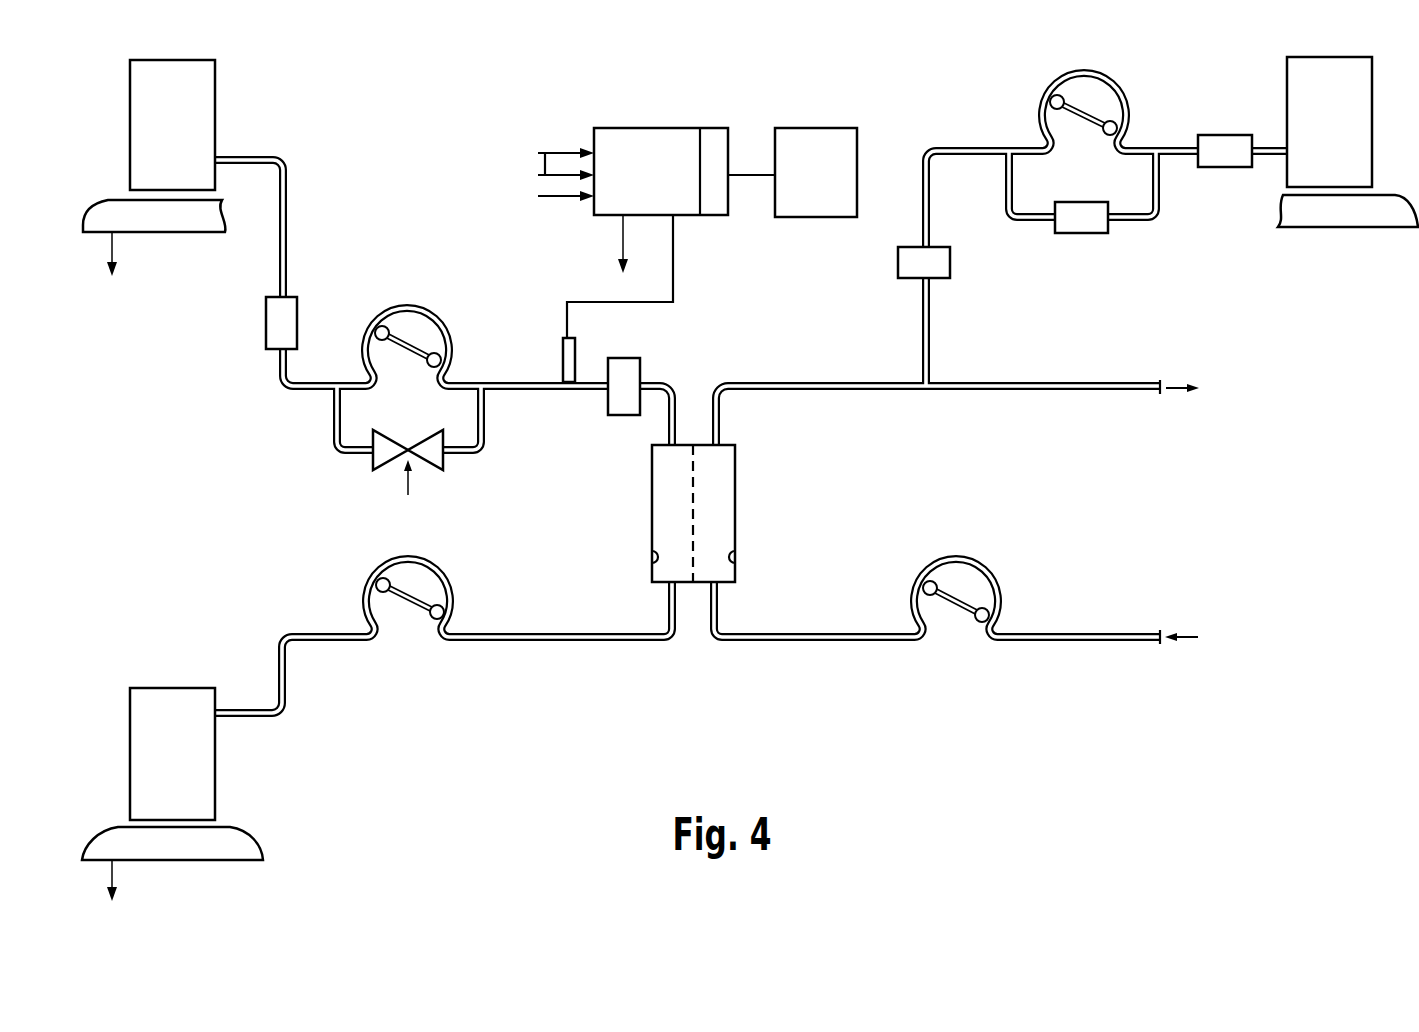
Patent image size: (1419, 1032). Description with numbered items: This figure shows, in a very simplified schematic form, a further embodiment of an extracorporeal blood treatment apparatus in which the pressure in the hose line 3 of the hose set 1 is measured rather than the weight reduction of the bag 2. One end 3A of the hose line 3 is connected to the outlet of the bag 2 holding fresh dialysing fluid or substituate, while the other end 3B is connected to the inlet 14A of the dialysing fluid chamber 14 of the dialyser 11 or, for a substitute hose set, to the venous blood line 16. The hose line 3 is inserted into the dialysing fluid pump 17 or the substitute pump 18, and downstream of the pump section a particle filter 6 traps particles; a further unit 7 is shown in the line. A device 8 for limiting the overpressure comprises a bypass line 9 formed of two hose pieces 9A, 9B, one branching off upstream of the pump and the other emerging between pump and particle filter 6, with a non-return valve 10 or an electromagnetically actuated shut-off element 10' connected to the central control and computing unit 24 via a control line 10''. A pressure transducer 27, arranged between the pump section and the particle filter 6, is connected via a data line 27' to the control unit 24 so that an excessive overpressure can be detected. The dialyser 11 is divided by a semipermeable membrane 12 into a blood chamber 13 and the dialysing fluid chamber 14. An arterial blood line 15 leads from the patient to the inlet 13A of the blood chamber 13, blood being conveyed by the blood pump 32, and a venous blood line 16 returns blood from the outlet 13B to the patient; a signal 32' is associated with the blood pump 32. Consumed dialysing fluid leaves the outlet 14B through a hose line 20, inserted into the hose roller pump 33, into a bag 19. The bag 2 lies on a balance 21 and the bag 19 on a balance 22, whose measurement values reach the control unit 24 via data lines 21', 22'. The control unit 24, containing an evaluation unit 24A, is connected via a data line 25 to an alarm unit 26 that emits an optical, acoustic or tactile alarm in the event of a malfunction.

The hose set 1 is at (323, 343).
The bag 2 is at (218, 76).
The hose line 3 is at (287, 203).
The end of hose line 3A is at (222, 152).
The other end of hose line 3B is at (665, 440).
The particle filter 6 is at (606, 408).
The filter 7 is at (264, 332).
The device for limiting the overpressure 8 is at (308, 475).
The bypass line 9 is at (458, 473).
The hose piece 9A is at (335, 432).
The other hose piece 9B is at (483, 424).
The non-return valve 10 is at (1083, 255).
The electromagnetically actuated shut-off element 10' is at (380, 485).
The control line 10'' is at (496, 377).
The dialyser 11 is at (746, 504).
The semipermeable membrane 12 is at (697, 535).
The blood chamber 13 is at (740, 558).
The inlet of blood chamber 13A is at (720, 590).
The outlet of blood chamber 13B is at (722, 440).
The dialysing fluid chamber 14 is at (650, 557).
The inlet of dialysing fluid chamber 14A is at (673, 440).
The outlet of dialysing fluid chamber 14B is at (682, 588).
The arterial blood line 15 is at (1033, 644).
The venous blood line 16 is at (1022, 383).
The dialysing fluid pump 17 is at (415, 340).
The substitute pump 18 is at (1100, 85).
The bag 19 is at (196, 687).
The hose line 20 is at (478, 643).
The balance 21 is at (750, 253).
The data line 21' is at (353, 191).
The balance 22 is at (172, 883).
The data line 22' is at (326, 505).
The central control and computing unit 24 is at (635, 142).
The evaluation unit 24A is at (713, 142).
The data line 25 is at (745, 172).
The alarm unit 26 is at (823, 127).
The pressure transducer 27 is at (530, 354).
The data line 27' is at (660, 276).
The blood pump 32 is at (956, 652).
The pump signal 32' is at (528, 241).
The hose roller pump 33 is at (399, 604).